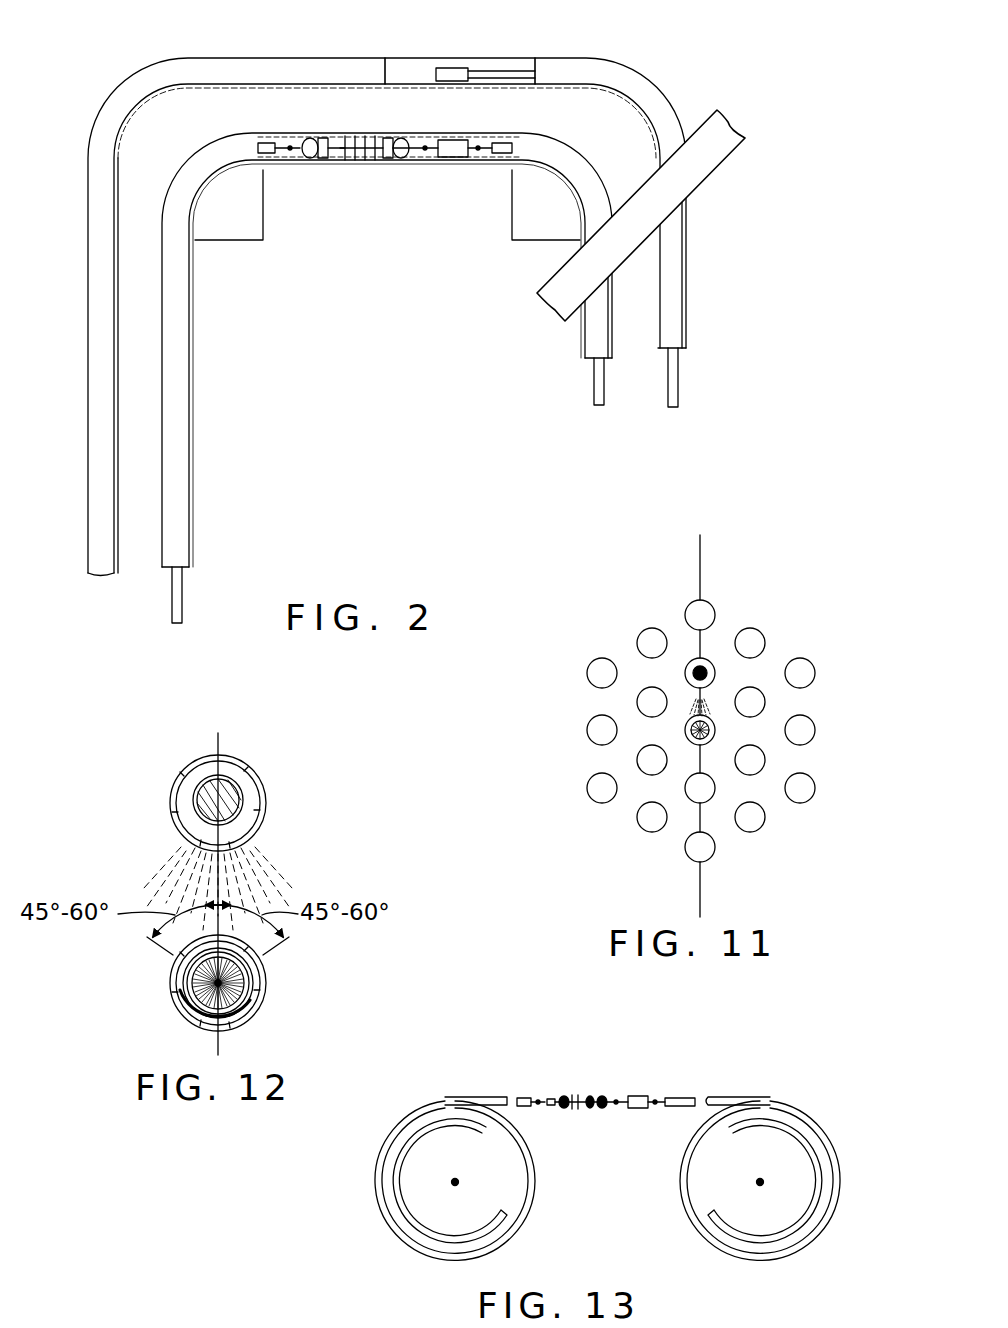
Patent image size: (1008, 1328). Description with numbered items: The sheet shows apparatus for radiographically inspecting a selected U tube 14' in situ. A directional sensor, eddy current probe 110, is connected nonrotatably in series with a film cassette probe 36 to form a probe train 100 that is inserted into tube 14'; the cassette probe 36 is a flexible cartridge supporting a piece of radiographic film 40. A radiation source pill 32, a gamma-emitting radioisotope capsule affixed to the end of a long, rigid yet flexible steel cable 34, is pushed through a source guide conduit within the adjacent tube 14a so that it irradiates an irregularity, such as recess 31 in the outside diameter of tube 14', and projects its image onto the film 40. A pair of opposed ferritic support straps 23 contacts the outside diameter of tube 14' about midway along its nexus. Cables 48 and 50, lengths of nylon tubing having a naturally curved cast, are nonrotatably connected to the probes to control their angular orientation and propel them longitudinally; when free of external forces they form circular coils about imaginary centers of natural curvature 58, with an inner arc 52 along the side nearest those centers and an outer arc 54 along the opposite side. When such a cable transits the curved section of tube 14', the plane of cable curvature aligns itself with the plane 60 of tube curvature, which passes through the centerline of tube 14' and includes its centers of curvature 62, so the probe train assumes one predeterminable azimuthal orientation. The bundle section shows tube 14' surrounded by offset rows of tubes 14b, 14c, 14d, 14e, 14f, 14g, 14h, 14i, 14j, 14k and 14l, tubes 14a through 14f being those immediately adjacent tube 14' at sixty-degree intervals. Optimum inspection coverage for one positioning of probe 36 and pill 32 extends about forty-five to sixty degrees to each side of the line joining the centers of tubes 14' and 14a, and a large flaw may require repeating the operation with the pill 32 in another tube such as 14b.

In FIG. 2, the adjacent tube 14a is at (182, 62).
In FIG. 11, the adjacent tube 14a is at (692, 658).
In FIG. 12, the adjacent tube 14a is at (172, 786).
In FIG. 2, the selected tube 14' is at (380, 341).
In FIG. 11, the selected tube 14' is at (786, 767).
In FIG. 12, the selected tube 14' is at (248, 985).
In FIG. 2, the pill 32 is at (450, 67).
In FIG. 11, the pill 32 is at (710, 660).
In FIG. 12, the pill 32 is at (192, 800).
In FIG. 2, the film cassette probe 36 is at (456, 164).
In FIG. 11, the film cassette probe 36 is at (694, 745).
In FIG. 12, the film cassette probe 36 is at (188, 1003).
In FIG. 13, the film cassette probe 36 is at (640, 1095).
In FIG. 2, the probe train 100 is at (401, 174).
In FIG. 2, the eddy current probe 110 is at (347, 165).
In FIG. 13, the eddy current probe 110 is at (578, 1093).
In FIG. 2, the centers of curvature 62 is at (503, 258).
In FIG. 2, the support straps 23 is at (698, 178).
In FIG. 2, the cable 50 is at (592, 388).
In FIG. 13, the cable 50 is at (825, 1130).
In FIG. 2, the cable 34 is at (680, 385).
In FIG. 2, the cable 48 is at (184, 606).
In FIG. 13, the cable 48 is at (378, 1175).
In FIG. 11, the plane of tube curvature 60 is at (700, 555).
In FIG. 11, the adjacent tube 14b is at (766, 702).
In FIG. 11, the adjacent tube 14c is at (752, 776).
In FIG. 11, the adjacent tube 14d is at (697, 804).
In FIG. 11, the adjacent tube 14e is at (640, 758).
In FIG. 11, the adjacent tube 14f is at (637, 702).
In FIG. 11, the tube 14g is at (766, 640).
In FIG. 11, the tube 14h is at (816, 730).
In FIG. 11, the tube 14i is at (755, 832).
In FIG. 11, the tube 14j is at (642, 826).
In FIG. 11, the tube 14k is at (586, 730).
In FIG. 11, the tube 14l is at (640, 636).
In FIG. 12, the recess 31 is at (168, 955).
In FIG. 12, the radiographic film 40 is at (252, 975).
In FIG. 13, the inner arc 52 is at (457, 1108).
In FIG. 13, the outer arc 54 is at (443, 1098).
In FIG. 13, the center of natural curvature 58 is at (455, 1180).